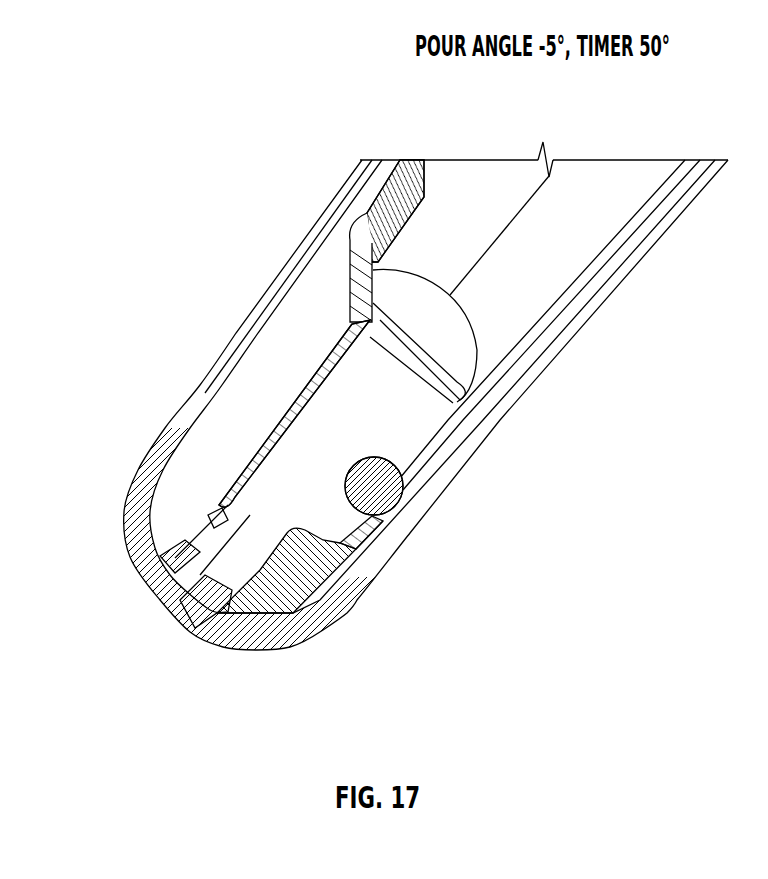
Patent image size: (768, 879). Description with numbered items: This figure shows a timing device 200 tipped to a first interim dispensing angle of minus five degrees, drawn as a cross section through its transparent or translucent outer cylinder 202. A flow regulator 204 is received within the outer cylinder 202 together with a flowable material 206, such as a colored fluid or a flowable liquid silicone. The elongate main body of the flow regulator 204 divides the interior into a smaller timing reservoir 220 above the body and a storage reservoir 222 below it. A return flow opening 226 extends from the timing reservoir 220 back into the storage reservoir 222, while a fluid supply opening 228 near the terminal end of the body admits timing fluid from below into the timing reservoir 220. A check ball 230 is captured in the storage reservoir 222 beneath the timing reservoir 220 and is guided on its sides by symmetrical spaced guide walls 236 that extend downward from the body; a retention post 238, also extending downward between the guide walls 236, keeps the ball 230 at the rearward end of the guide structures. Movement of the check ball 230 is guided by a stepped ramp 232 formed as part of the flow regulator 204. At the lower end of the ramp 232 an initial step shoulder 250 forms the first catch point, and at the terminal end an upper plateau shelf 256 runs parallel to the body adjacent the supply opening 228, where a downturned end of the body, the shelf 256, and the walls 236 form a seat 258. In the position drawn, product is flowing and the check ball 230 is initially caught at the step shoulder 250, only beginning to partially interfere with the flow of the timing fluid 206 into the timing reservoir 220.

The timing device 200 is at (643, 282).
The outer cylinder 202 is at (690, 180).
The flow regulator 204 is at (403, 187).
The flowable material 206 is at (508, 325).
The timing reservoir 220 is at (247, 411).
The storage reservoir 222 is at (597, 220).
The return flow opening 226 is at (380, 213).
The fluid supply opening 228 is at (236, 495).
The check ball 230 is at (381, 488).
The stepped ramp 232 is at (327, 593).
The guide walls 236 is at (367, 405).
The retention post 238 is at (473, 405).
The initial step shoulder 250 is at (387, 518).
The upper plateau shelf 256 is at (273, 567).
The seat 258 is at (233, 542).